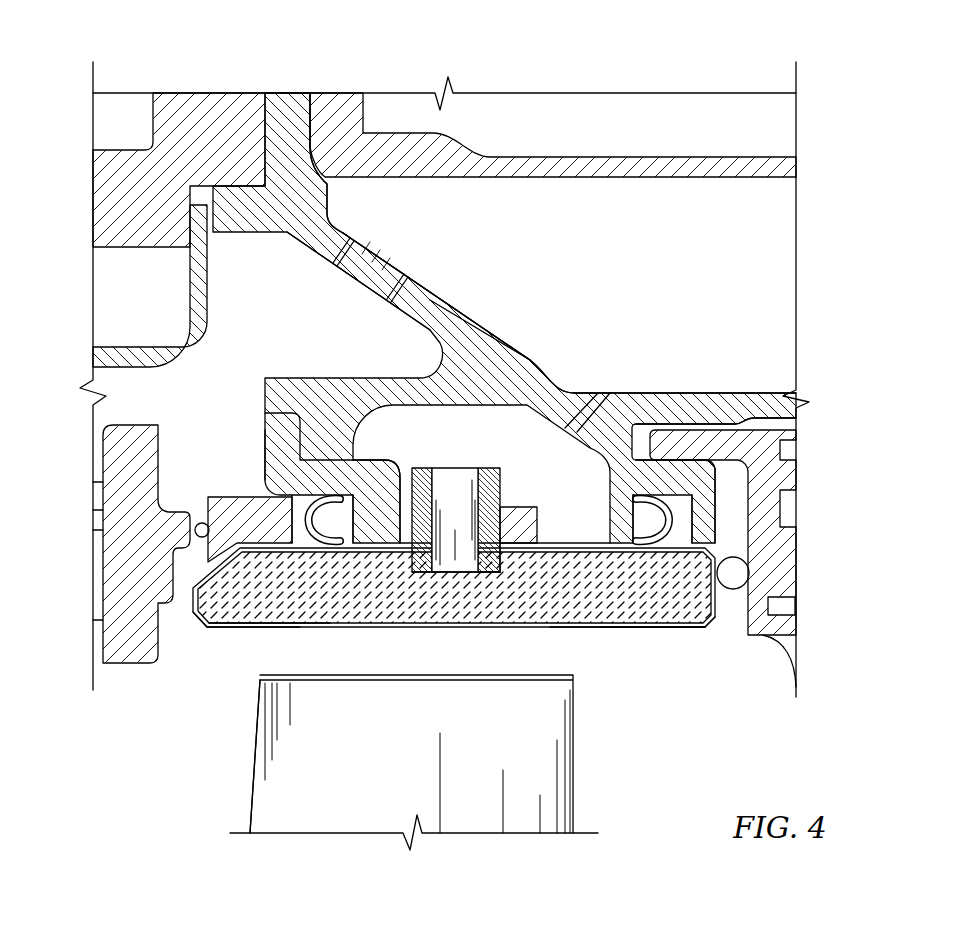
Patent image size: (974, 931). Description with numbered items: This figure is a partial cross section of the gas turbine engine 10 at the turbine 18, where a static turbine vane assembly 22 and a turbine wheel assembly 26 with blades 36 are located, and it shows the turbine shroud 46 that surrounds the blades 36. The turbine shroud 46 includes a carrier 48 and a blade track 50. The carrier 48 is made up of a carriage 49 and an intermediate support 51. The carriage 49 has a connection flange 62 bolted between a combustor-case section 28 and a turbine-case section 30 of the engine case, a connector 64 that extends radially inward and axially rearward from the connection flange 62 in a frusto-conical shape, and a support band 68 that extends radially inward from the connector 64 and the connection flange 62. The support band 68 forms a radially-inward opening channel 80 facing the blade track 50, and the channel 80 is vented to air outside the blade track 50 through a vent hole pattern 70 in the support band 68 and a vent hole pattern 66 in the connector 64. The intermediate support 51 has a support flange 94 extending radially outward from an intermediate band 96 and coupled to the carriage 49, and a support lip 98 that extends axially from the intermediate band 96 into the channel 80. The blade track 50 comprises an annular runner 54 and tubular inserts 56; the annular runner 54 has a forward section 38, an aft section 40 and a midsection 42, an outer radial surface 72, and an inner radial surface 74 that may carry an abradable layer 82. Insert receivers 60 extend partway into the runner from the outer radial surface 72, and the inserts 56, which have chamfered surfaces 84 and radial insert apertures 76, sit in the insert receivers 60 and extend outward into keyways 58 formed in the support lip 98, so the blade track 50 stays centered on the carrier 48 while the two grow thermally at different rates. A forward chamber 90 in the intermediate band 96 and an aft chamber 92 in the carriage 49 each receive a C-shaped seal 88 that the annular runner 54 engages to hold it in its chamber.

The gas turbine engine 10 is at (893, 122).
The turbine 18 is at (803, 150).
The static turbine vane assembly 22 is at (793, 460).
The turbine wheel assembly 26 is at (297, 770).
The combustor-case section 28 is at (153, 112).
The turbine-case section 30 is at (597, 157).
The blade 36 is at (270, 812).
The forward section 38 is at (222, 630).
The aft section 40 is at (717, 637).
The midsection 42 is at (518, 630).
The turbine shroud 46 is at (566, 298).
The carrier 48 is at (528, 355).
The carriage 49 is at (458, 305).
The blade track 50 is at (645, 645).
The intermediate support 51 is at (257, 455).
The annular runner 54 is at (588, 628).
The tubular insert 56 is at (497, 480).
The keyway 58 is at (478, 508).
The insert receiver 60 is at (412, 572).
The connection flange 62 is at (312, 108).
The connector 64 is at (330, 222).
The vent hole pattern 66 is at (333, 262).
The support band 68 is at (710, 393).
The vent hole pattern 70 is at (580, 394).
The outer radial surface 72 is at (603, 548).
The inner radial surface 74 is at (232, 626).
The insert aperture 76 is at (447, 495).
The channel 80 is at (395, 417).
The abradable layer 82 is at (283, 626).
The chamfered surface 84 is at (505, 572).
The seal 88 is at (342, 500).
The forward chamber 90 is at (295, 508).
The aft chamber 92 is at (660, 515).
The support flange 94 is at (266, 412).
The intermediate band 96 is at (213, 495).
The support lip 98 is at (388, 507).